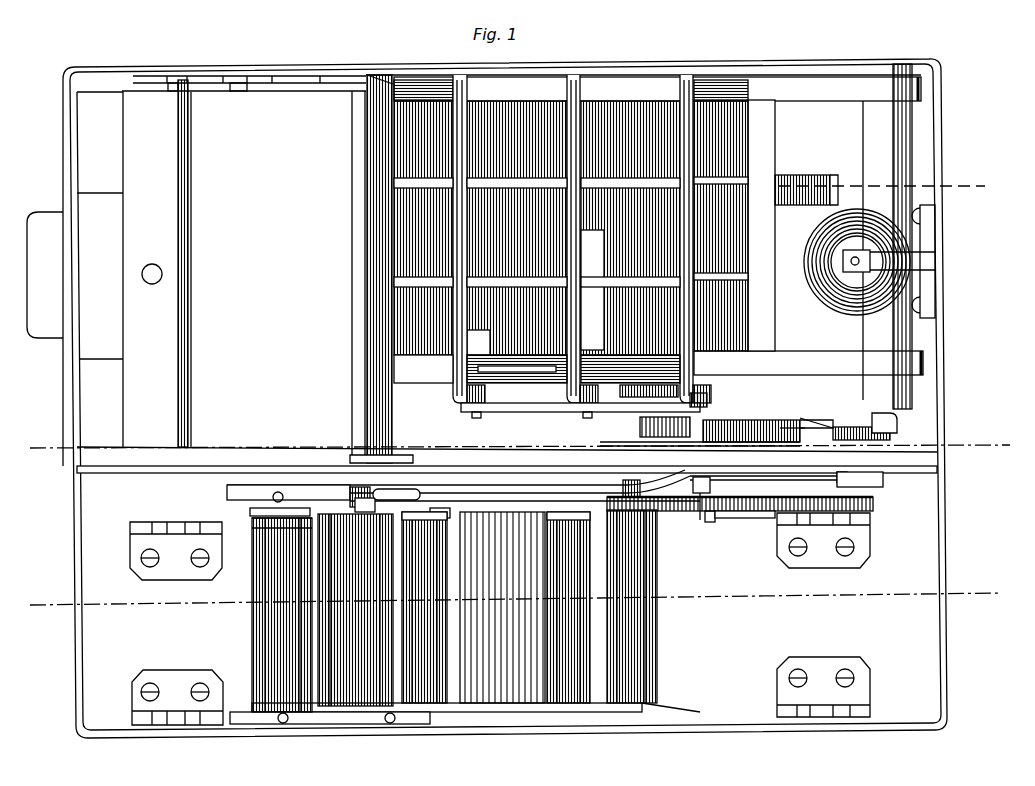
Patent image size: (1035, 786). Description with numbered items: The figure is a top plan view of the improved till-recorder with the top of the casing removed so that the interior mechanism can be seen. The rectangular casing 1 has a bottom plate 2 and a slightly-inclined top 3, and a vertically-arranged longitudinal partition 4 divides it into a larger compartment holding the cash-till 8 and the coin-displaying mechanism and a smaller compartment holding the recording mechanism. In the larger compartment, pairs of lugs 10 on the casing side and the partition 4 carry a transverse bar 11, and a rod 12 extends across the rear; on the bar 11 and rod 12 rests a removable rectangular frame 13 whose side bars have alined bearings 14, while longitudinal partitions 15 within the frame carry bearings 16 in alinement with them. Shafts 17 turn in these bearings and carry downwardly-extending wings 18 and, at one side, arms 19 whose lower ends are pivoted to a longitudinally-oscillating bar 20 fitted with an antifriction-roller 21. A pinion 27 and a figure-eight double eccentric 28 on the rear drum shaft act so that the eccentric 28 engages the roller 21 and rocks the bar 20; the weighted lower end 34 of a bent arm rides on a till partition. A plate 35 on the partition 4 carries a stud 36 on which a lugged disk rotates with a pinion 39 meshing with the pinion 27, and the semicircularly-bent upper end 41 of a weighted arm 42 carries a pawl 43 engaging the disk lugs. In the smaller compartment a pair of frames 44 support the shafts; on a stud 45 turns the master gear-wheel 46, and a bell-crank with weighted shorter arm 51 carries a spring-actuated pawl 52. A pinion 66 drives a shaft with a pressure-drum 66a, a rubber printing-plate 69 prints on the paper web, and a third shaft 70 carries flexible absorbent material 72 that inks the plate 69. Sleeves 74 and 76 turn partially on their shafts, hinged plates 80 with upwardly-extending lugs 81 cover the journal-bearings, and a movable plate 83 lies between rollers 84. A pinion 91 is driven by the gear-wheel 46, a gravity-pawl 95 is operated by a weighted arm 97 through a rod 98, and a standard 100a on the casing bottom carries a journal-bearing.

The rectangular casing 1 is at (955, 354).
The bottom plate 2 is at (518, 447).
The slightly-inclined top 3 is at (512, 600).
The partition 4 is at (507, 460).
The cash-till 8 is at (172, 222).
The lugs 10 is at (353, 80).
The bar 11 is at (350, 407).
The rod 12 is at (898, 159).
The rectangular frame 13 is at (644, 237).
The alined bearings 14 is at (550, 388).
The partitions 15 is at (740, 181).
The bearings 16 is at (470, 182).
The shafts 17 is at (470, 333).
The wings 18 is at (478, 225).
The arms 19 is at (478, 399).
The longitudinally-oscillating bar 20 is at (520, 412).
The antifriction-roller 21 is at (740, 404).
The pinion 27 is at (640, 430).
The double eccentric 28 is at (623, 385).
The weighted lower end 34 is at (822, 178).
The plate 35 is at (822, 440).
The stud 36 is at (808, 420).
The pinion 39 is at (793, 420).
The semicircularly-bent upper end 41 is at (768, 431).
The arm 42 is at (885, 425).
The pawl 43 is at (690, 444).
The frames 44 is at (684, 714).
The stud 45 is at (742, 518).
The master gear-wheel 46 is at (712, 522).
The shorter arm 51 is at (883, 478).
The spring-actuated pawl 52 is at (873, 500).
The pinion 66 is at (360, 500).
The pressure-drum 66a is at (412, 662).
The printing-plate 69 is at (312, 610).
The third shaft 70 is at (256, 512).
The flexible absorbent material 72 is at (252, 590).
The sleeve 74 is at (412, 624).
The sleeve 76 is at (580, 582).
The plates 80 is at (262, 494).
The upwardly-extending lugs 81 is at (345, 498).
The movable plate 83 is at (502, 607).
The rollers 84 is at (437, 542).
The pinion 91 is at (642, 515).
The gravity-pawl 95 is at (701, 520).
The weighted arm 97 is at (395, 505).
The rod 98 is at (440, 514).
The standard 100a is at (164, 526).